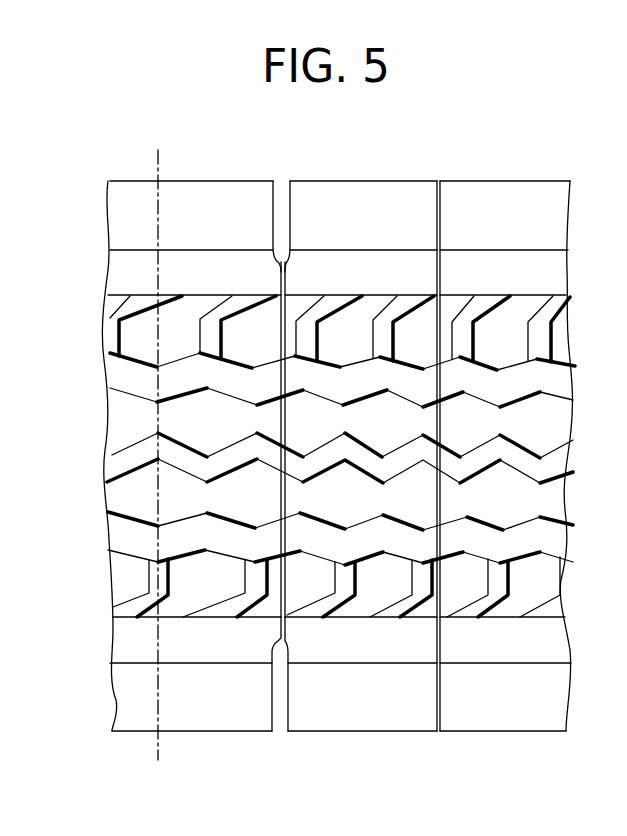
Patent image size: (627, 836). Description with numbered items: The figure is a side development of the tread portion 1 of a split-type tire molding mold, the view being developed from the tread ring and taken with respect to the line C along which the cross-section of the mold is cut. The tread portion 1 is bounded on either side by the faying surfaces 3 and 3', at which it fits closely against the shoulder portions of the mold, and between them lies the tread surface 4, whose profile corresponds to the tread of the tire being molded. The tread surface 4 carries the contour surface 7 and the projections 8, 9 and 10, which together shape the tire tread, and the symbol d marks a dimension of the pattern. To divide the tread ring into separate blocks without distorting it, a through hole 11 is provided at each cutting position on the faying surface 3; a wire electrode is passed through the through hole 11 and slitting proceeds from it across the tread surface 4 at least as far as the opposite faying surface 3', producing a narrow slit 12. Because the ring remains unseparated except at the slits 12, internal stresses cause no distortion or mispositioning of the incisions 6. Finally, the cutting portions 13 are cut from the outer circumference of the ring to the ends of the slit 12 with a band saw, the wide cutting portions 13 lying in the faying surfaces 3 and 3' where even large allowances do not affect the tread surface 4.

The tread portion 1 is at (397, 172).
The faying surface 3 is at (308, 238).
The faying surface 3' is at (309, 674).
The tread surface 4 is at (62, 295).
The incision 6 is at (441, 270).
The contour surface 7 is at (560, 340).
The projection 8 is at (113, 378).
The projection 9 is at (113, 470).
The projection 10 is at (117, 532).
The through hole 11 is at (282, 266).
The slit 12 is at (294, 300).
The cutting portion 13 is at (282, 207).
The line C is at (168, 742).
The symbol d is at (263, 501).